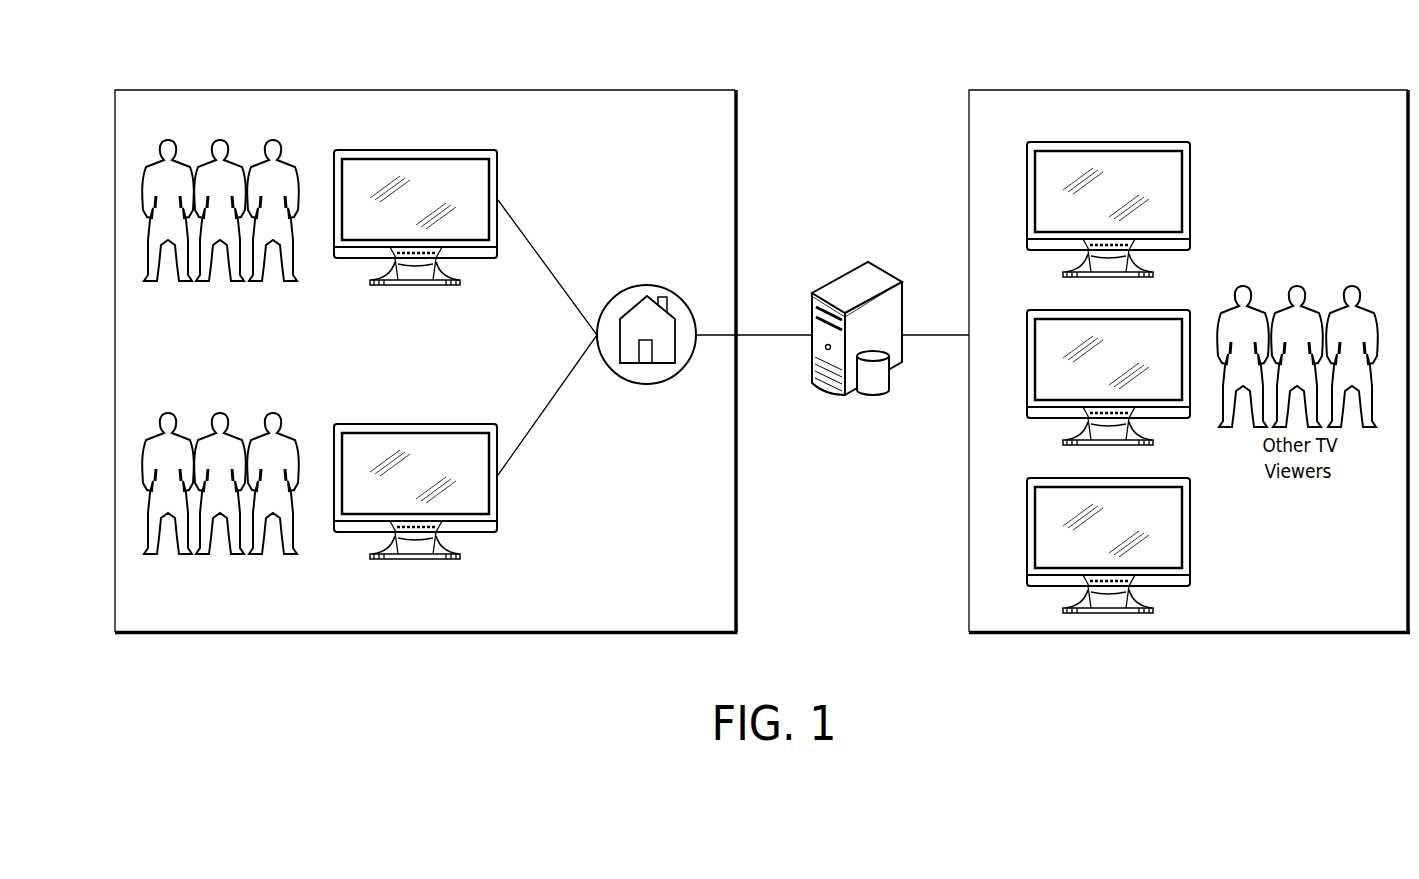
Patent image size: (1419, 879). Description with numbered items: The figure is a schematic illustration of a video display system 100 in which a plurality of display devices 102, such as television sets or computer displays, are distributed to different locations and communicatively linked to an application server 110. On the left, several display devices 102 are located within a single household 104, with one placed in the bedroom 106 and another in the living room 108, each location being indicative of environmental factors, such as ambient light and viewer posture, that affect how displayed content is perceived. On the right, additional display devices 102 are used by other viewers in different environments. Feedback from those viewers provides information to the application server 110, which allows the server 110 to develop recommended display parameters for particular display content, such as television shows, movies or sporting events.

The video display system 100 is at (1278, 47).
The display devices 102 is at (365, 150).
The household 104 is at (626, 90).
The bedroom 106 is at (220, 237).
The living room 108 is at (220, 512).
The application server 110 is at (840, 273).